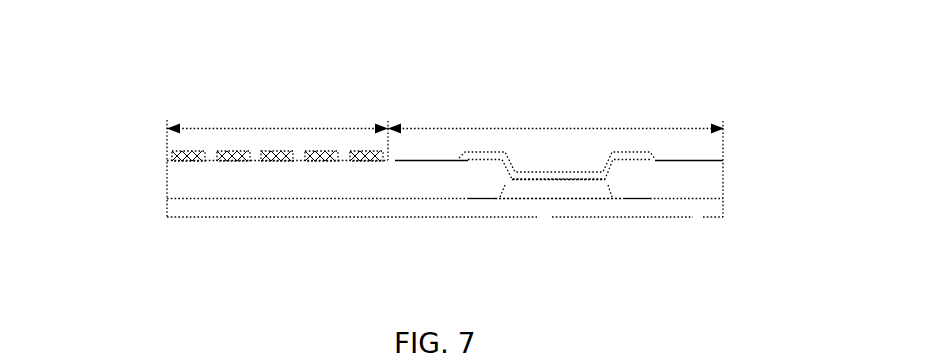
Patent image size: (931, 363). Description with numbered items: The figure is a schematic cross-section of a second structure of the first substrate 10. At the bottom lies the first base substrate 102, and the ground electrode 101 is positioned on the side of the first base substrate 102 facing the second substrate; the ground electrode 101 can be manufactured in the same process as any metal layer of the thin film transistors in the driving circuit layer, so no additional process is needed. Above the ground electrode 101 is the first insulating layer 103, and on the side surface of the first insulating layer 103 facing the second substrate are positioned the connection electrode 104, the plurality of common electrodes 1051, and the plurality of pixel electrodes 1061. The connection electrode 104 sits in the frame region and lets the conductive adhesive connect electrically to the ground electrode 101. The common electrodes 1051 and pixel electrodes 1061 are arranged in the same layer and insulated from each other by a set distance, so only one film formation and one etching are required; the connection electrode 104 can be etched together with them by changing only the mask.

The first substrate 10 is at (188, 72).
The ground electrode 101 is at (552, 200).
The first base substrate 102 is at (728, 208).
The first insulating layer 103 is at (728, 180).
The connection electrode 104 is at (665, 167).
The common electrode 1051 is at (233, 162).
The pixel electrode 1061 is at (168, 155).